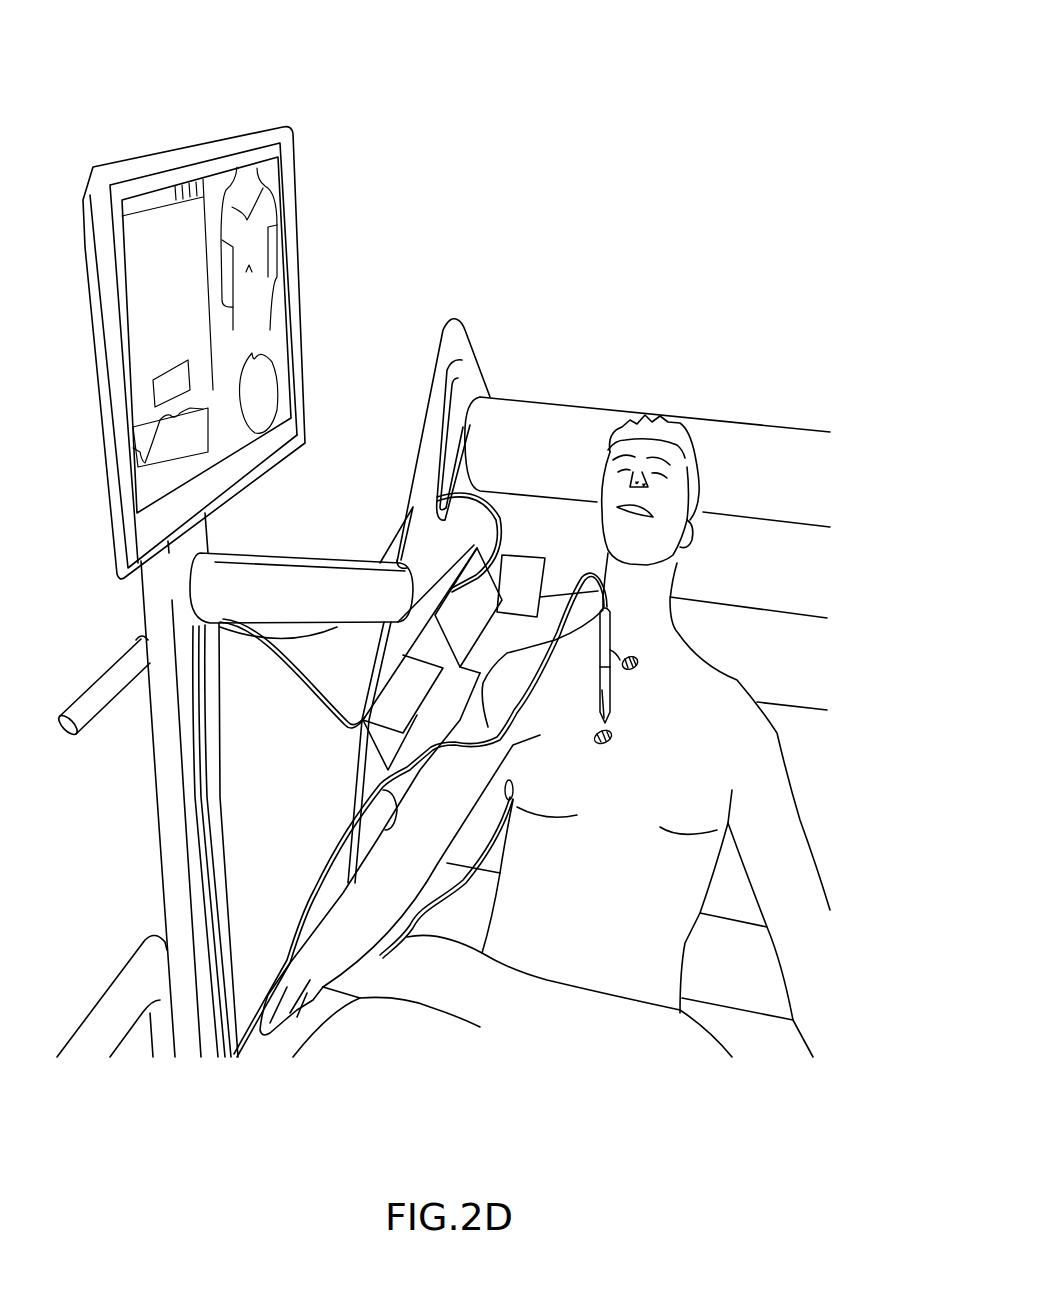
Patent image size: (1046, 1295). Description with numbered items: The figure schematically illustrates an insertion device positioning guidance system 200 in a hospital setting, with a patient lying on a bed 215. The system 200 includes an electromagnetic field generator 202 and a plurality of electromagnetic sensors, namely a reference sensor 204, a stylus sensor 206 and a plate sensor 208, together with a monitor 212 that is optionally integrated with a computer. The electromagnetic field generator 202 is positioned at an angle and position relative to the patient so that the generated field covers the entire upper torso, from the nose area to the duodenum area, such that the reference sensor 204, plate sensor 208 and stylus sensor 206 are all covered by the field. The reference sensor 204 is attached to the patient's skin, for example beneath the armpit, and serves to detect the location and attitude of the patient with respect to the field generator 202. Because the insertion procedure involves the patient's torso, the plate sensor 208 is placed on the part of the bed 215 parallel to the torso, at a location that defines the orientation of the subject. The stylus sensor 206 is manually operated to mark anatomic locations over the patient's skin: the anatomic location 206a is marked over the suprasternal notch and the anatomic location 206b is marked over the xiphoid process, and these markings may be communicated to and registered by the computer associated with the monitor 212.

The insertion device positioning guidance system 200 is at (160, 80).
The electromagnetic field generator 202 is at (407, 681).
The reference sensor 204 is at (520, 787).
The stylus sensor 206 is at (612, 684).
The anatomic location 206a is at (640, 658).
The anatomic location 206b is at (617, 735).
The plate sensor 208 is at (525, 580).
The monitor 212 is at (118, 437).
The bed 215 is at (795, 412).